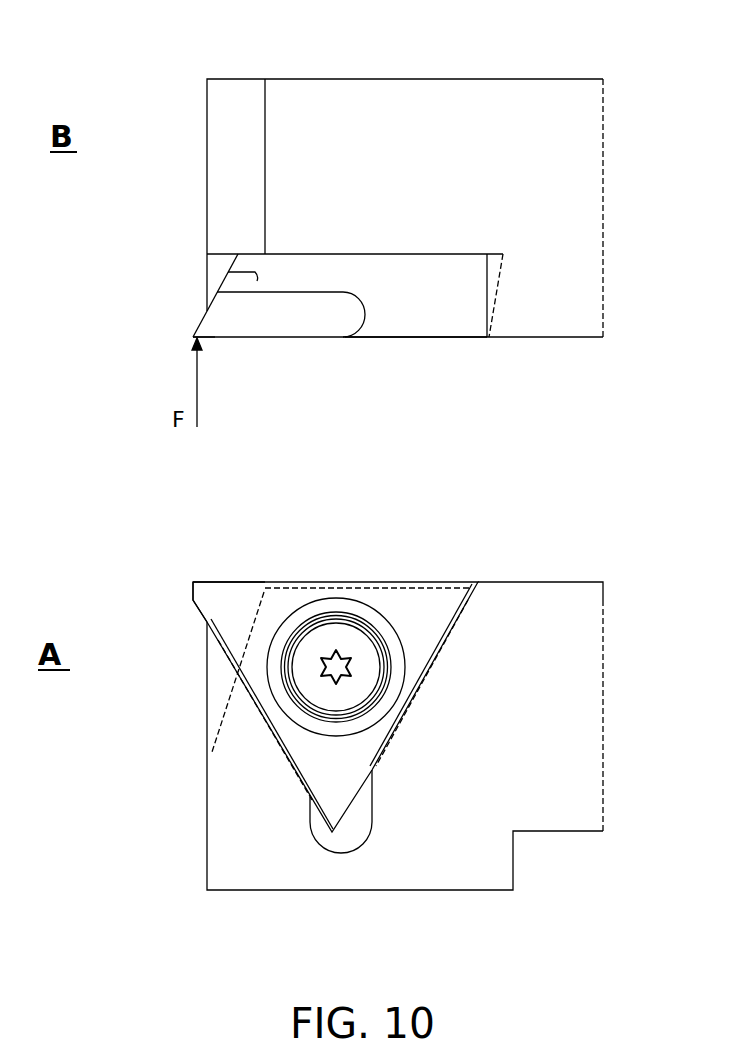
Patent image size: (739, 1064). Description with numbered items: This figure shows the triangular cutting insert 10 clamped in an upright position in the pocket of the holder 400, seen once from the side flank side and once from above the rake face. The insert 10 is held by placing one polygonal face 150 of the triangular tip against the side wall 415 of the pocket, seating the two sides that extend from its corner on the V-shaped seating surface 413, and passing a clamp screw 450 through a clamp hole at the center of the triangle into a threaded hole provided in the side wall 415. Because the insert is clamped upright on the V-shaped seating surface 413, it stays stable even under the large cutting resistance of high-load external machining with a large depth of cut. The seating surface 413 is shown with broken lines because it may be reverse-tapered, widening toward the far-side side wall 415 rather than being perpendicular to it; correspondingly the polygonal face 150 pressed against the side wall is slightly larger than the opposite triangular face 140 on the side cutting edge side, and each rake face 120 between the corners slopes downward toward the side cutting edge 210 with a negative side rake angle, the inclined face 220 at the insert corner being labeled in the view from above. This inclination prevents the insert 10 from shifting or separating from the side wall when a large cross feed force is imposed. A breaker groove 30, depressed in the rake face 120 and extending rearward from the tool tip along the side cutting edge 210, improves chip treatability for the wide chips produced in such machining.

The cutting insert 10 is at (334, 364).
The breaker groove 30 is at (268, 590).
The rake face 120 is at (225, 271).
The triangular face 140 is at (428, 338).
The polygonal face 150 is at (323, 254).
The side cutting edge 210 is at (231, 338).
The inclined surface 220 is at (197, 325).
The holder 400 is at (558, 79).
The V-shaped seating surface 413 is at (487, 298).
The side wall 415 is at (385, 257).
The clamp screw 450 is at (372, 660).